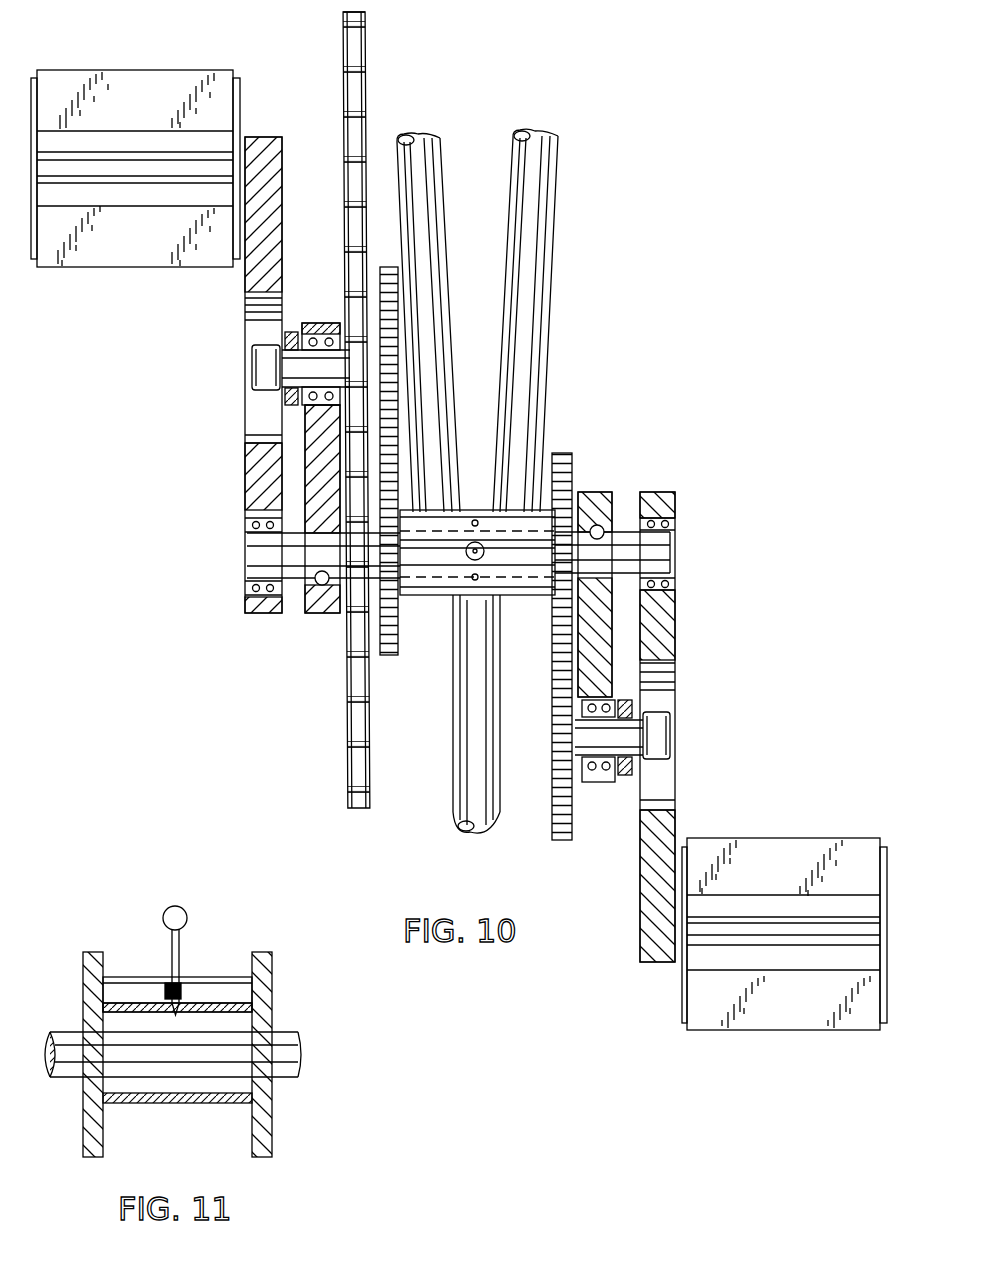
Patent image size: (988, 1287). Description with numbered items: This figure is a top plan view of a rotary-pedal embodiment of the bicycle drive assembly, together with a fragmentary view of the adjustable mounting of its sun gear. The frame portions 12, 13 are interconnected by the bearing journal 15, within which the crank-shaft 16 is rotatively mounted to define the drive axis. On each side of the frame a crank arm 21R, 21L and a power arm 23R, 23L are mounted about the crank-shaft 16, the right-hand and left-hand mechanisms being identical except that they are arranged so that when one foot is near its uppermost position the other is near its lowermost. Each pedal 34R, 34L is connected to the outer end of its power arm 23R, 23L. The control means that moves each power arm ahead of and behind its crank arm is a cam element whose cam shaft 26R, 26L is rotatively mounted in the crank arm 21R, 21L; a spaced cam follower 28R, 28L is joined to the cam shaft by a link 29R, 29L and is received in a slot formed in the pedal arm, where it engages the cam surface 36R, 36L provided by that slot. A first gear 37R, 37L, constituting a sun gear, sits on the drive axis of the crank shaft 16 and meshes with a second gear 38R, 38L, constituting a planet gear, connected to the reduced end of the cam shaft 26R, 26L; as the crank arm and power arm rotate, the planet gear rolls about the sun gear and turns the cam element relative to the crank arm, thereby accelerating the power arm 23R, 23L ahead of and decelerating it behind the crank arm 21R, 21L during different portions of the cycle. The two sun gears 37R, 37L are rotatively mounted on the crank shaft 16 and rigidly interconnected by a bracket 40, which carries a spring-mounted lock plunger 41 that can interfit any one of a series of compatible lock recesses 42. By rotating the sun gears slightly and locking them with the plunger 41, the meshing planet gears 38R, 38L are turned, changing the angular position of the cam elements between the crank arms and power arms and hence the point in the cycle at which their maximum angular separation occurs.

In FIG. 10, the frame portion 12 is at (455, 770).
In FIG. 10, the frame portion 13 is at (504, 290).
In FIG. 10, the bearing journal 15 is at (478, 505).
In FIG. 11, the bearing journal 15 is at (210, 1103).
In FIG. 10, the crank-shaft 16 is at (660, 553).
In FIG. 11, the crank-shaft 16 is at (290, 1047).
In FIG. 10, the crank arm 21R is at (325, 613).
In FIG. 10, the crank arm 21L is at (637, 462).
In FIG. 10, the power arm 23R is at (255, 485).
In FIG. 10, the power arm 23L is at (717, 464).
In FIG. 10, the cam shaft 26R is at (318, 325).
In FIG. 10, the cam shaft 26L is at (612, 765).
In FIG. 10, the cam follower 28R is at (258, 368).
In FIG. 10, the cam follower 28L is at (748, 734).
In FIG. 10, the link 29R is at (290, 333).
In FIG. 10, the link 29L is at (630, 770).
In FIG. 10, the pedal 34R is at (156, 54).
In FIG. 10, the pedal 34L is at (853, 812).
In FIG. 10, the cam surface 36R is at (262, 437).
In FIG. 10, the cam surface 36L is at (748, 692).
In FIG. 10, the first gear 37R is at (392, 655).
In FIG. 11, the first gear 37R is at (93, 952).
In FIG. 10, the first gear 37L is at (562, 453).
In FIG. 11, the first gear 37L is at (344, 1144).
In FIG. 10, the second gear 38R is at (392, 268).
In FIG. 10, the second gear 38L is at (562, 842).
In FIG. 10, the bracket 40 is at (433, 562).
In FIG. 11, the bracket 40 is at (140, 977).
In FIG. 10, the lock plunger 41 is at (490, 555).
In FIG. 11, the lock plunger 41 is at (187, 918).
In FIG. 11, the lock recesses 42 is at (183, 998).